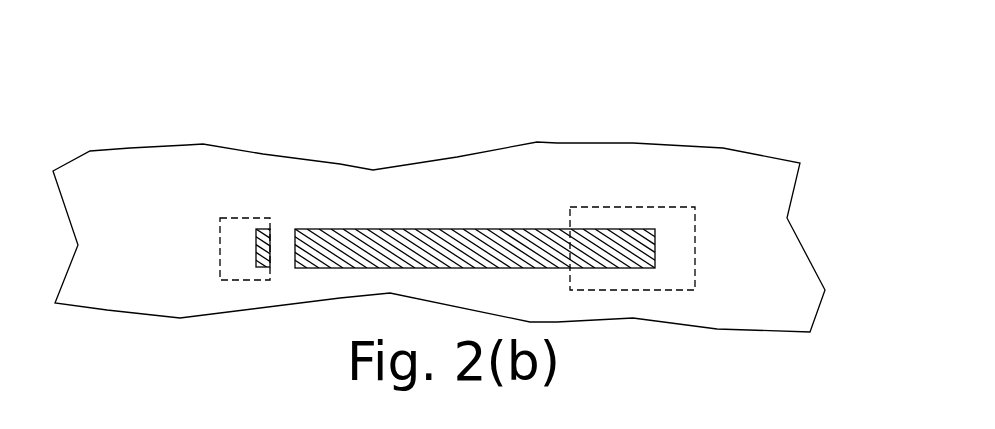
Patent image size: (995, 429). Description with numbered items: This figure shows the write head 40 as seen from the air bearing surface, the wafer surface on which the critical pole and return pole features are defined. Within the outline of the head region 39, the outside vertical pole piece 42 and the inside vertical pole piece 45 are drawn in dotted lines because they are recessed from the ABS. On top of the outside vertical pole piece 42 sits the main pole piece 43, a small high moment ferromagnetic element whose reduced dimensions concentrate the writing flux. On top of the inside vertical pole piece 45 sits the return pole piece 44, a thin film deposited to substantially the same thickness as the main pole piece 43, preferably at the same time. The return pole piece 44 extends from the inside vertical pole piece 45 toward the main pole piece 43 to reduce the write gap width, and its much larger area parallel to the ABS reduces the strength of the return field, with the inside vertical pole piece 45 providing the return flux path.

The substrate 39 is at (558, 160).
The write head 40 is at (367, 145).
The outside vertical pole piece 42 is at (230, 229).
The main pole piece 43 is at (257, 256).
The return pole piece 44 is at (653, 240).
The inside vertical pole piece 45 is at (685, 275).